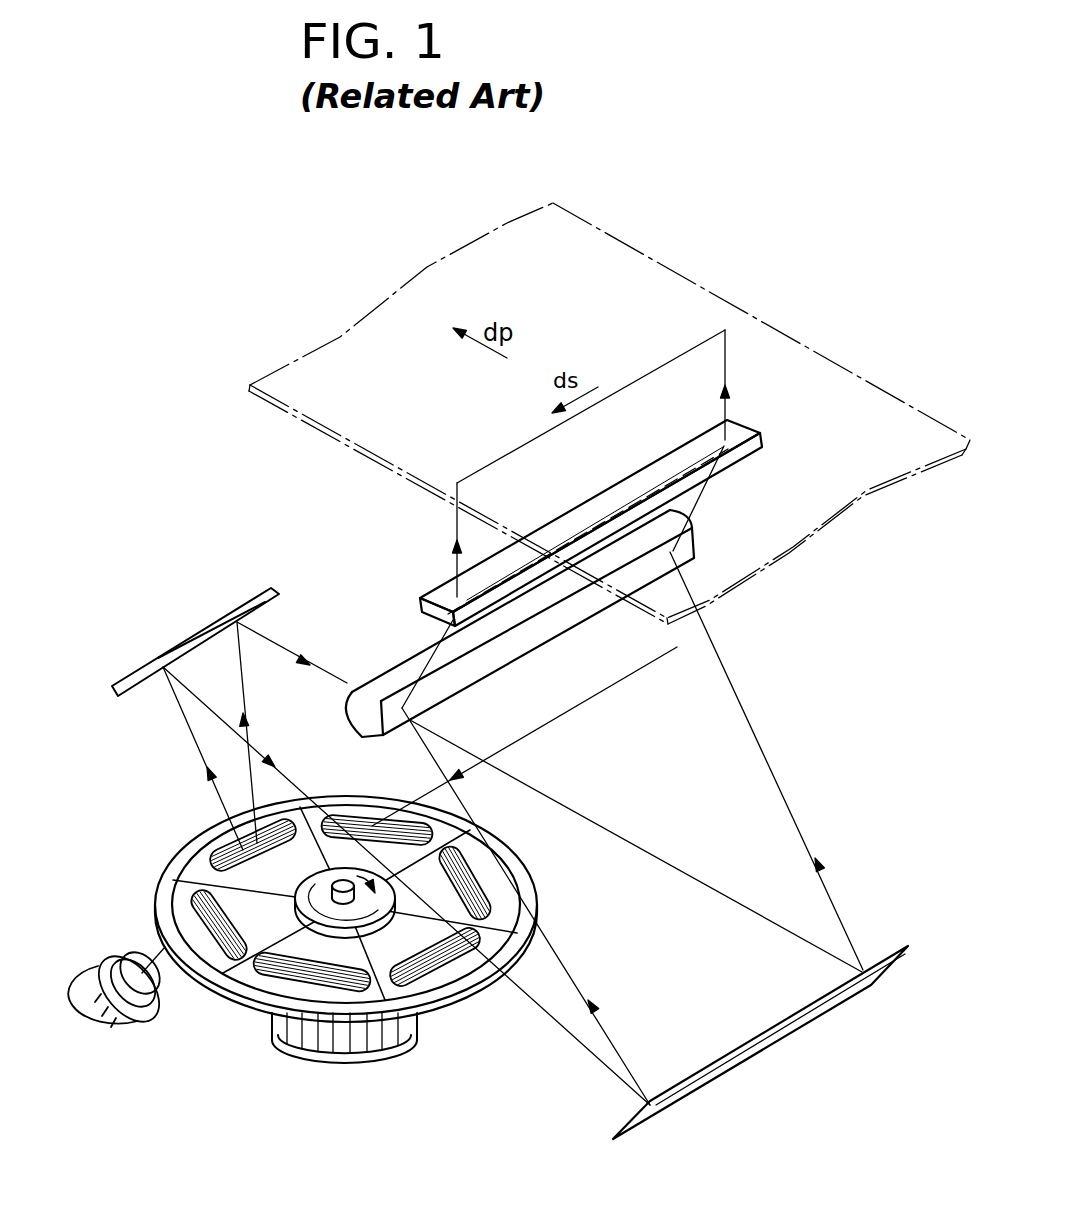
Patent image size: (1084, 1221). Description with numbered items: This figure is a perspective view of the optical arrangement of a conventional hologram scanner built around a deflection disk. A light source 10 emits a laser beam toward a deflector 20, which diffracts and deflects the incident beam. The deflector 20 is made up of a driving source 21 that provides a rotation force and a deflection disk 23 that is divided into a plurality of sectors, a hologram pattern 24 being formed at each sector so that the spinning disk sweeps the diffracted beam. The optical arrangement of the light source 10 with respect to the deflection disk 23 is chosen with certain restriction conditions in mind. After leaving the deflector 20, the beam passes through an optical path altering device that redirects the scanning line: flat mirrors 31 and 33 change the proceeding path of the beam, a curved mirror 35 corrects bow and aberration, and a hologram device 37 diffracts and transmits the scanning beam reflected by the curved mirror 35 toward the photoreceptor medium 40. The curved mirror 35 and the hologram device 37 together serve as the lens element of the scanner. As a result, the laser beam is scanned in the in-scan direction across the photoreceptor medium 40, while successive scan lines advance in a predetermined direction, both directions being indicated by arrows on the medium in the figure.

The light source 10 is at (149, 1026).
The deflector 20 is at (304, 947).
The driving source 21 is at (345, 1065).
The deflection disk 23 is at (155, 911).
The hologram pattern 24 is at (213, 862).
The flat mirror 31 is at (228, 610).
The flat mirror 33 is at (838, 1003).
The curved mirror 35 is at (398, 673).
The hologram device 37 is at (430, 595).
The photoreceptor medium 40 is at (752, 303).